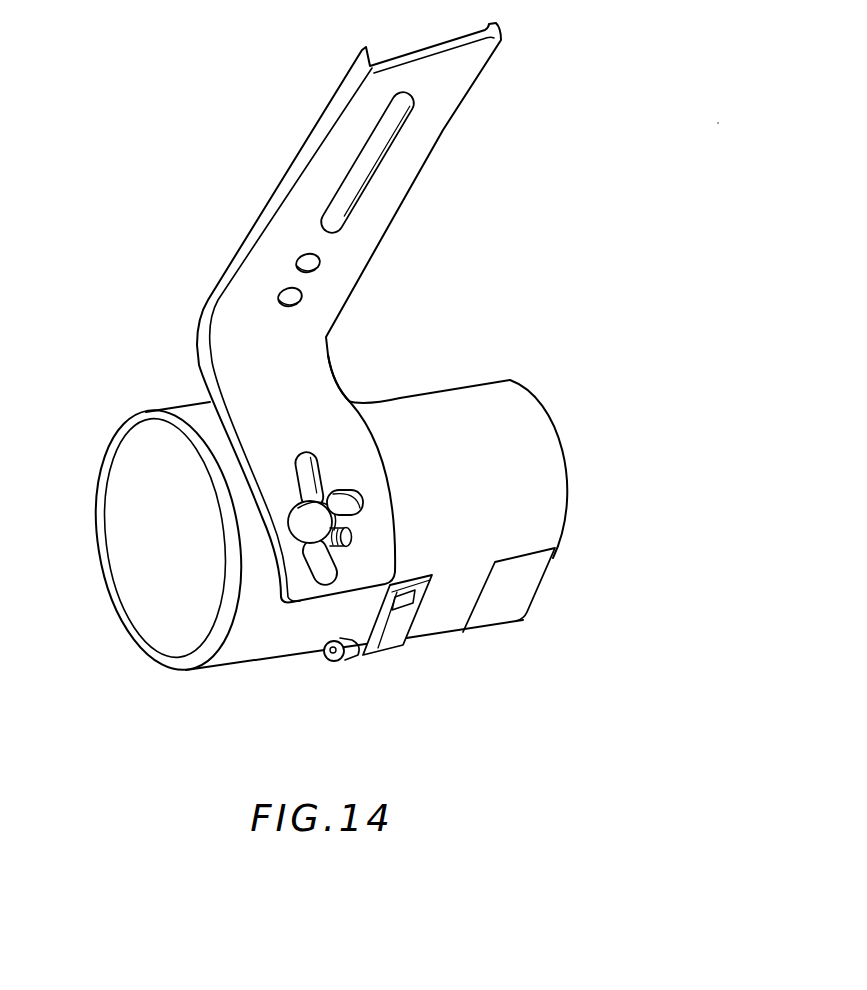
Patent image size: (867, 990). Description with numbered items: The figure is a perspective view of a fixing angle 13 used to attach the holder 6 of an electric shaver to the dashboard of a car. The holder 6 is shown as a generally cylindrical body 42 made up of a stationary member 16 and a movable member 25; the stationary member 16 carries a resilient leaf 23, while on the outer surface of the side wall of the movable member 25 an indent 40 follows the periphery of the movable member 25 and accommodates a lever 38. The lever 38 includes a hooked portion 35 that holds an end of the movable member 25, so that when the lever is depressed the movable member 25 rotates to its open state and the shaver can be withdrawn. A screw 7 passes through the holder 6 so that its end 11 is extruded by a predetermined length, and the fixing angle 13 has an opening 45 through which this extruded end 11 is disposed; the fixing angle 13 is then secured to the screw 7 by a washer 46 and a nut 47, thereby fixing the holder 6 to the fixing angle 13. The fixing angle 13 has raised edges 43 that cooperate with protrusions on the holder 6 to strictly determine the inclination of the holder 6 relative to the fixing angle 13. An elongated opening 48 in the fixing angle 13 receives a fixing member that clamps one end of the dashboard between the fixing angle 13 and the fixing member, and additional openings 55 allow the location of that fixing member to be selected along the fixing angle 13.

The raised edges 43 is at (307, 140).
The opening 48 is at (360, 173).
The additional openings 55 is at (319, 262).
The fixing angle 13 is at (330, 332).
The opening 45 is at (306, 455).
The washer 46 is at (323, 490).
The nut 47 is at (357, 500).
The stationary member 16 is at (523, 445).
The end 11 is at (348, 528).
The screw 7 is at (351, 541).
The body 42 is at (150, 642).
The holder 6 is at (245, 650).
The lever 38 is at (364, 644).
The indent 40 is at (377, 607).
The hooked portion 35 is at (400, 603).
The resilient leaf 23 is at (447, 628).
The movable member 25 is at (507, 615).